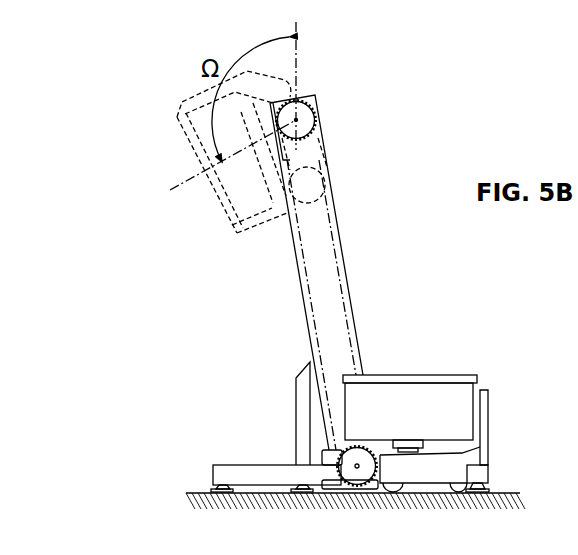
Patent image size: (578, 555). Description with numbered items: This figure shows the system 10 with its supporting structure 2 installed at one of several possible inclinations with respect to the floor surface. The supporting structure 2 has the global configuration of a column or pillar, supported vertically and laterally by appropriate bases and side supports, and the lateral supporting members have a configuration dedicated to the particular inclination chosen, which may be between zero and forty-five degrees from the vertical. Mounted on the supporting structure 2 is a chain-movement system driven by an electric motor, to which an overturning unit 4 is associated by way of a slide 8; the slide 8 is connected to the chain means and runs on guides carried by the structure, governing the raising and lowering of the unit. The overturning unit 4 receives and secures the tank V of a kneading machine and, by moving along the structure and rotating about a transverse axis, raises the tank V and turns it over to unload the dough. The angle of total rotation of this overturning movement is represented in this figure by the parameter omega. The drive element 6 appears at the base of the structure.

The system 10 is at (140, 221).
The supporting structure 2 is at (298, 309).
The slide 8 is at (337, 210).
The overturning unit 4 is at (320, 448).
The drive gear 6 is at (357, 472).
The tank V is at (423, 371).